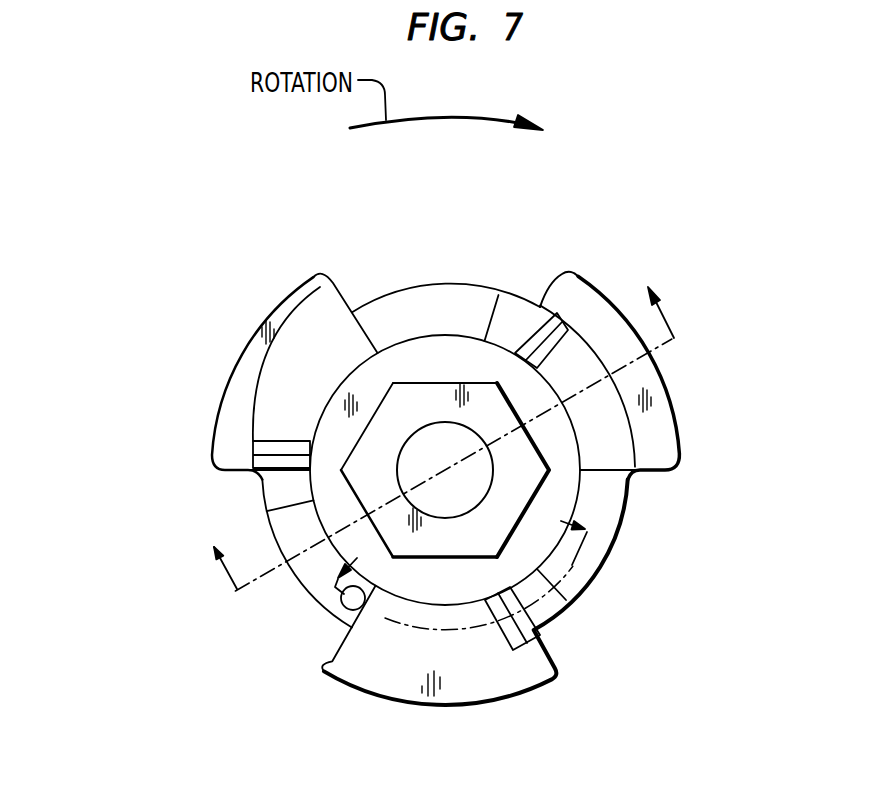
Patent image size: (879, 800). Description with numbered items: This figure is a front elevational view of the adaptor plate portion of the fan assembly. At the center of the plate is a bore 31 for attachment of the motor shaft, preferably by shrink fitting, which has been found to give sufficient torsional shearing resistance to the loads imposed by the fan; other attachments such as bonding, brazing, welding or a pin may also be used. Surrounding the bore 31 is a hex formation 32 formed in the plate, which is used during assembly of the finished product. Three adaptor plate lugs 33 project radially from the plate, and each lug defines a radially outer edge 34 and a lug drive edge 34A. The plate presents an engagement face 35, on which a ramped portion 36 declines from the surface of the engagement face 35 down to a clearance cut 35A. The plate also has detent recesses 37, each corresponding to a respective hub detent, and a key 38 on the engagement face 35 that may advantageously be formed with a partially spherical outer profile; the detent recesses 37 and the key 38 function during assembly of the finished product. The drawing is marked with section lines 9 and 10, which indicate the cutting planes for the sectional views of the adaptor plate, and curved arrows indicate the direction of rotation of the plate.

The section line 9- 9 is at (437, 427).
The section line 10- 10 is at (461, 566).
The bore 31 is at (442, 437).
The hex formation 32 is at (518, 455).
The adaptor plate lugs 33 is at (188, 289).
The radially outer edge 34 is at (270, 314).
The lug drive edge 34A is at (345, 272).
The engagement face 35 is at (227, 413).
The clearance cut 35A is at (280, 427).
The ramped portion 36 is at (253, 442).
The detent recesses 37 is at (270, 488).
The key 38 is at (363, 592).